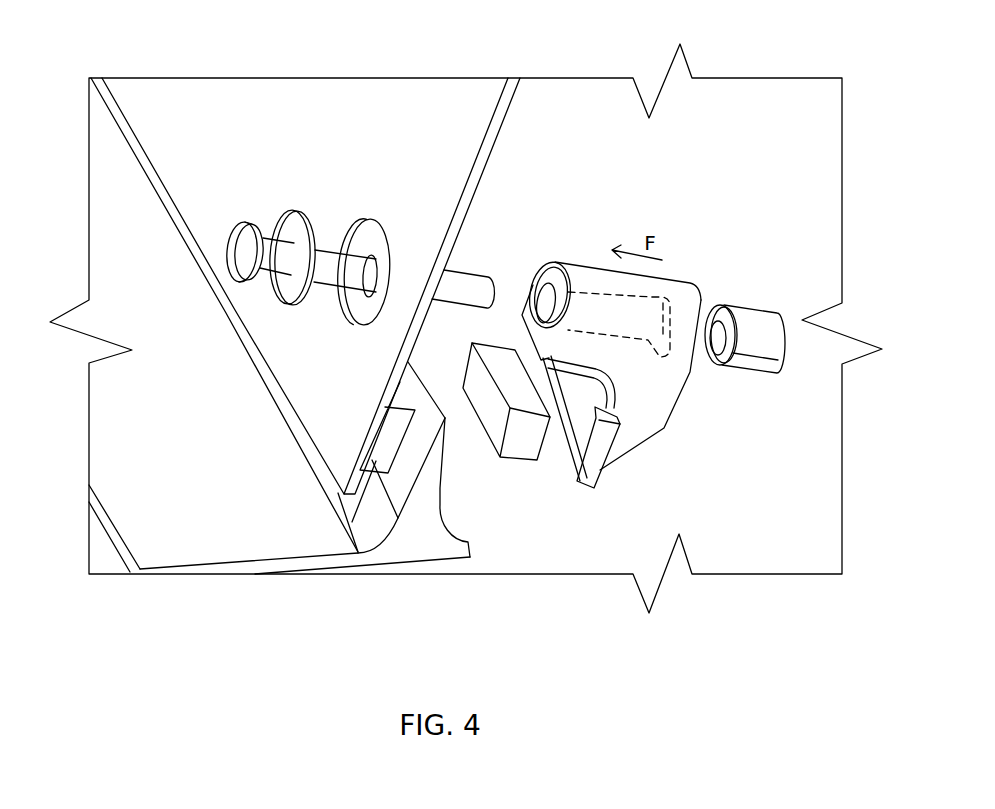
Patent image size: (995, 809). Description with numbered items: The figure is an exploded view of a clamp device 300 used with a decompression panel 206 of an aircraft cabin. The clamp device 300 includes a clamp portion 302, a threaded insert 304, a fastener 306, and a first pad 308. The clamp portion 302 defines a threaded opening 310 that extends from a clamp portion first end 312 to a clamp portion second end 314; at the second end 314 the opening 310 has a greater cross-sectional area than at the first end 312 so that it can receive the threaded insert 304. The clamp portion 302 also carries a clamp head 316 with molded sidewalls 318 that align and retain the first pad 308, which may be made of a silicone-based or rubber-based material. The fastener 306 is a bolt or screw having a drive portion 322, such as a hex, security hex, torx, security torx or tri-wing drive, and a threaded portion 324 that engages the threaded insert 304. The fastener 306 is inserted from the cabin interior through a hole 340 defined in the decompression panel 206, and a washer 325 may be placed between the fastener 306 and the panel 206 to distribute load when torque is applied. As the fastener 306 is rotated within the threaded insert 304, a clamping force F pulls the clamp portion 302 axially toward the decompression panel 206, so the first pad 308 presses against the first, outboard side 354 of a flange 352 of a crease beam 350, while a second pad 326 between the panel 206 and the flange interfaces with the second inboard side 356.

The decompression panel 206 is at (288, 88).
The clamp device 300 is at (638, 360).
The clamp portion 302 is at (646, 350).
The threaded insert 304 is at (747, 307).
The fastener 306 is at (293, 220).
The first pad 308 is at (527, 465).
The threaded opening 310 is at (551, 296).
The clamp portion first end 312 is at (515, 288).
The clamp portion second end 314 is at (700, 278).
The clamp head 316 is at (580, 438).
The molded sidewalls 318 is at (600, 455).
The drive portion 322 is at (235, 249).
The threaded portion 324 is at (335, 243).
The washer 325 is at (293, 211).
The second pad 326 is at (347, 523).
The hole 340 is at (370, 255).
The crease beam 350 is at (303, 563).
The flange 352 is at (418, 557).
The first, outboard side 354 is at (447, 472).
The second inboard side 356 is at (425, 417).